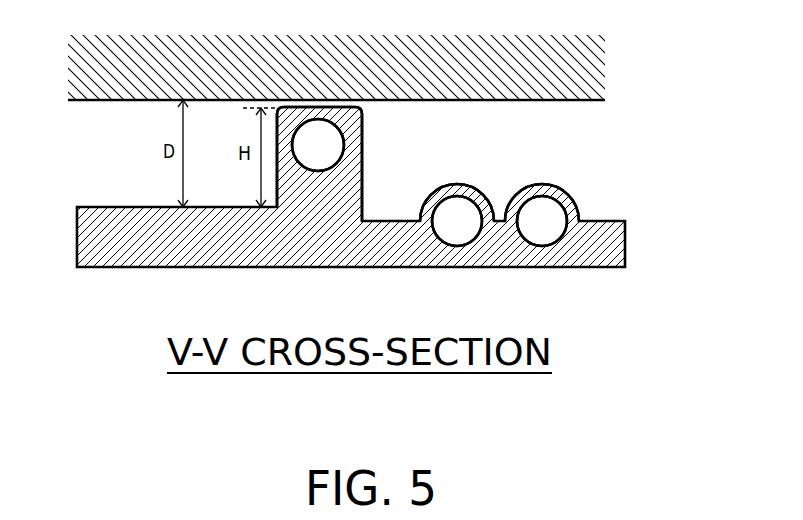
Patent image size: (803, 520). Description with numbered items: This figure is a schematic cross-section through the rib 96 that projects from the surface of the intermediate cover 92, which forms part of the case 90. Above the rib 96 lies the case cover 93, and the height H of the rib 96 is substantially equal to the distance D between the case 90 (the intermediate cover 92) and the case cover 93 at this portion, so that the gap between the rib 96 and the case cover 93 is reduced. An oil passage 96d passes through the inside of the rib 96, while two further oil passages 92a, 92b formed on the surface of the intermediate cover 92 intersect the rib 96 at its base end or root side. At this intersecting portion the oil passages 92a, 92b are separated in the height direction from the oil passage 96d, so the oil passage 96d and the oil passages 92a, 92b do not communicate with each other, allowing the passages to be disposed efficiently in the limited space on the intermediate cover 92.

The case cover 93 is at (575, 69).
The intermediate cover 92 is at (361, 214).
The case 90 is at (595, 247).
The rib 96 is at (353, 184).
The oil passage 96d is at (329, 143).
The oil passage 92a is at (457, 220).
The oil passage 92b is at (541, 220).